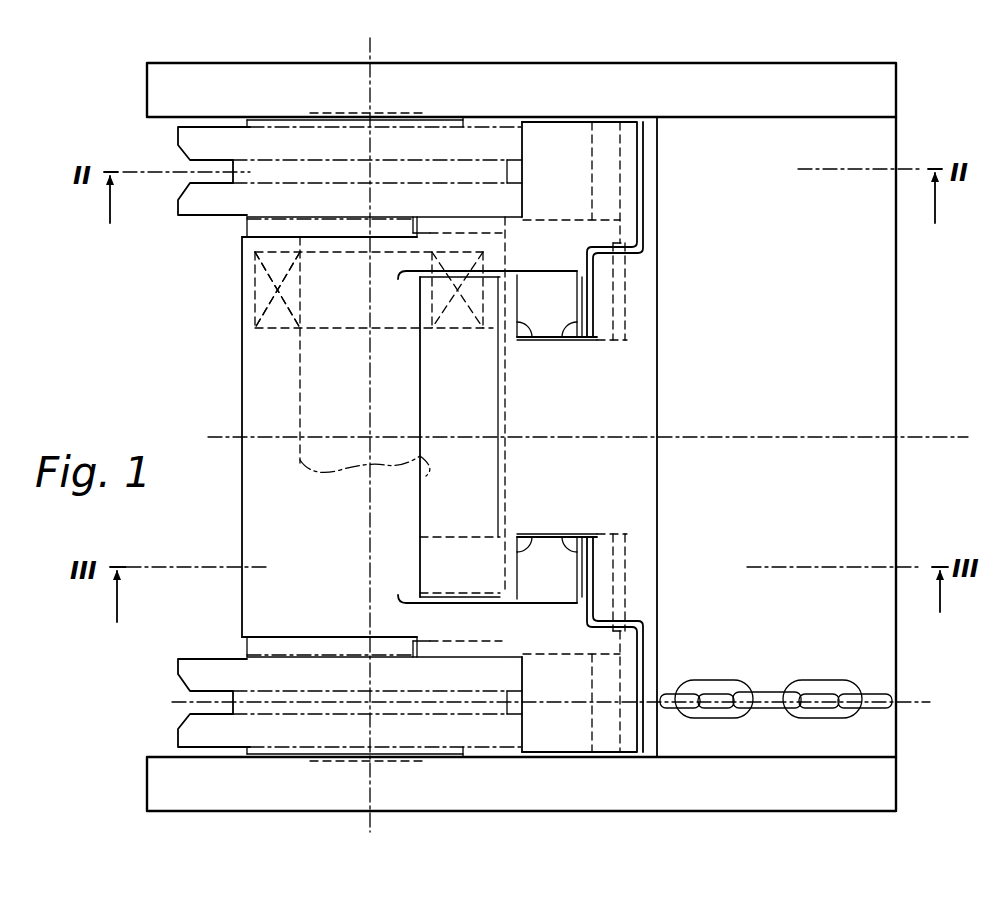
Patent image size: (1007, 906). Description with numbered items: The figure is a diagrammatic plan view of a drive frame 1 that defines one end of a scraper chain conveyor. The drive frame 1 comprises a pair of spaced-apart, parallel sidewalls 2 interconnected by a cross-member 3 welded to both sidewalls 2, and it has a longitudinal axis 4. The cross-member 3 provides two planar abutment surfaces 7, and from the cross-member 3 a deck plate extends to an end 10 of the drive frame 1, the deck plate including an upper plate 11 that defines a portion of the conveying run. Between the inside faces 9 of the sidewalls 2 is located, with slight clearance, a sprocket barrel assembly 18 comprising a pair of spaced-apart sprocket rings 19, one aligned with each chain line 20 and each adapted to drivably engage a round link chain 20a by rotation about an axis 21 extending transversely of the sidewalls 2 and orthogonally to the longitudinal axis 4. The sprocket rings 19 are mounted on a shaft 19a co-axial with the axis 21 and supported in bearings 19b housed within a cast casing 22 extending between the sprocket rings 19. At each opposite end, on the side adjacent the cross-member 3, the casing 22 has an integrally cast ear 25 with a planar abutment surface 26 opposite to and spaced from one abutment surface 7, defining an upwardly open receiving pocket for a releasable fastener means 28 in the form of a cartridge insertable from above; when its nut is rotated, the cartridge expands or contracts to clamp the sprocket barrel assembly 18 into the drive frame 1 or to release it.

The drive frame 1 is at (917, 93).
The sidewalls 2 is at (162, 82).
The cross-member 3 is at (660, 349).
The longitudinal axis 4 is at (278, 437).
The planar abutment surfaces 7 is at (533, 340).
The inside faces 9 is at (160, 126).
The end 10 is at (897, 414).
The upper plate 11 is at (752, 501).
The sprocket barrel assembly 18 is at (258, 328).
The sprocket rings 19 is at (195, 208).
The shaft 19a is at (322, 200).
The bearings 19b is at (262, 288).
The chain line 20 is at (177, 700).
The round link chain 20a is at (775, 681).
The axis 21 is at (370, 527).
The cast casing 22 is at (341, 374).
The ear 25 is at (613, 116).
The planar abutment surface 26 is at (566, 340).
The releasable fastener means 28 is at (549, 290).